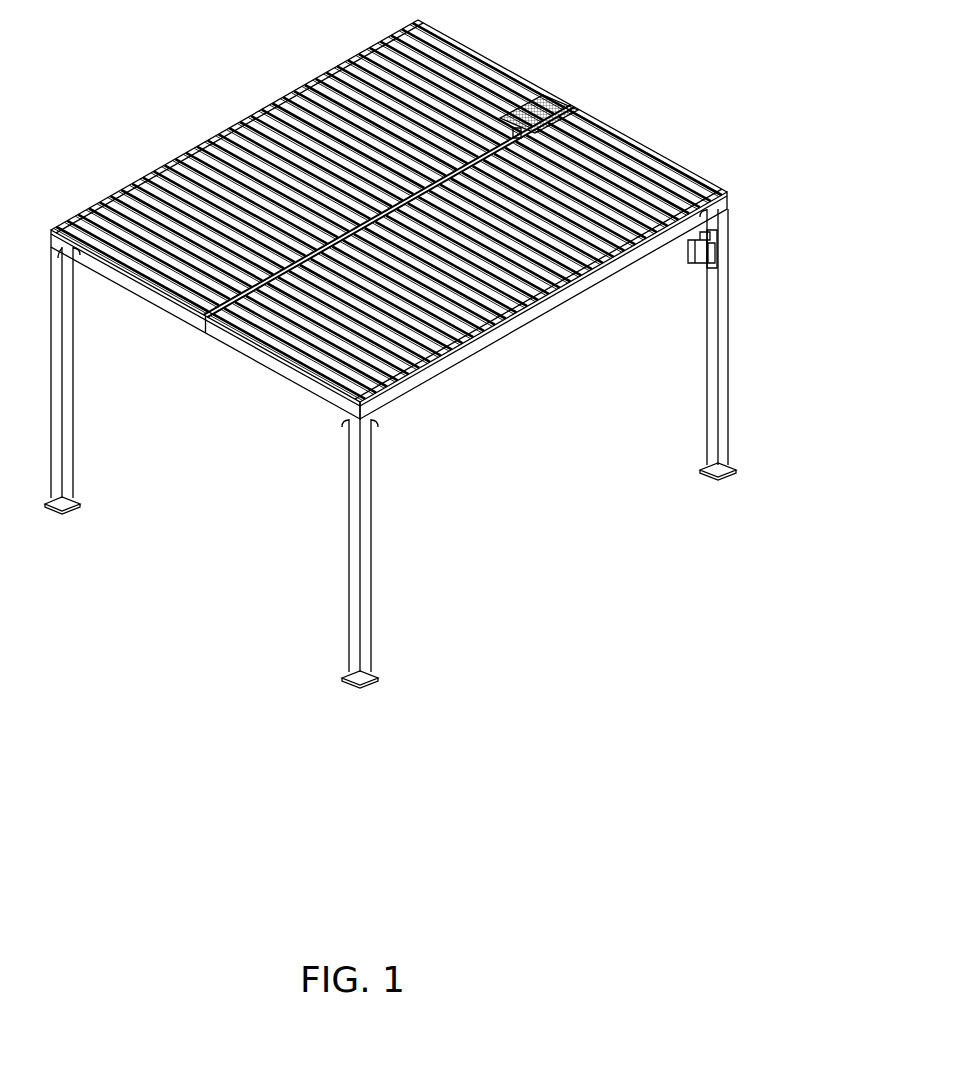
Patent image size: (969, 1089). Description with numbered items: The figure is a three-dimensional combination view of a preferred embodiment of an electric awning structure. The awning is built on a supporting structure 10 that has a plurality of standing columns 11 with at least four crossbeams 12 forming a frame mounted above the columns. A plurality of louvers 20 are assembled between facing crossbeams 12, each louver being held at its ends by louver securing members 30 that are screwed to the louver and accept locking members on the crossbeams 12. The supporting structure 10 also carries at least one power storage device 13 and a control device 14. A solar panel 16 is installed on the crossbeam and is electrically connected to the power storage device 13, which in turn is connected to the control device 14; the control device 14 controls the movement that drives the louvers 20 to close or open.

The supporting structure 10 is at (762, 226).
The standing columns 11 is at (67, 377).
The crossbeams 12 is at (273, 363).
The power storage device 13 is at (708, 233).
The control device 14 is at (703, 270).
The solar panel 16 is at (547, 107).
The louvers 20 is at (167, 200).
The louver securing members 30 is at (397, 233).